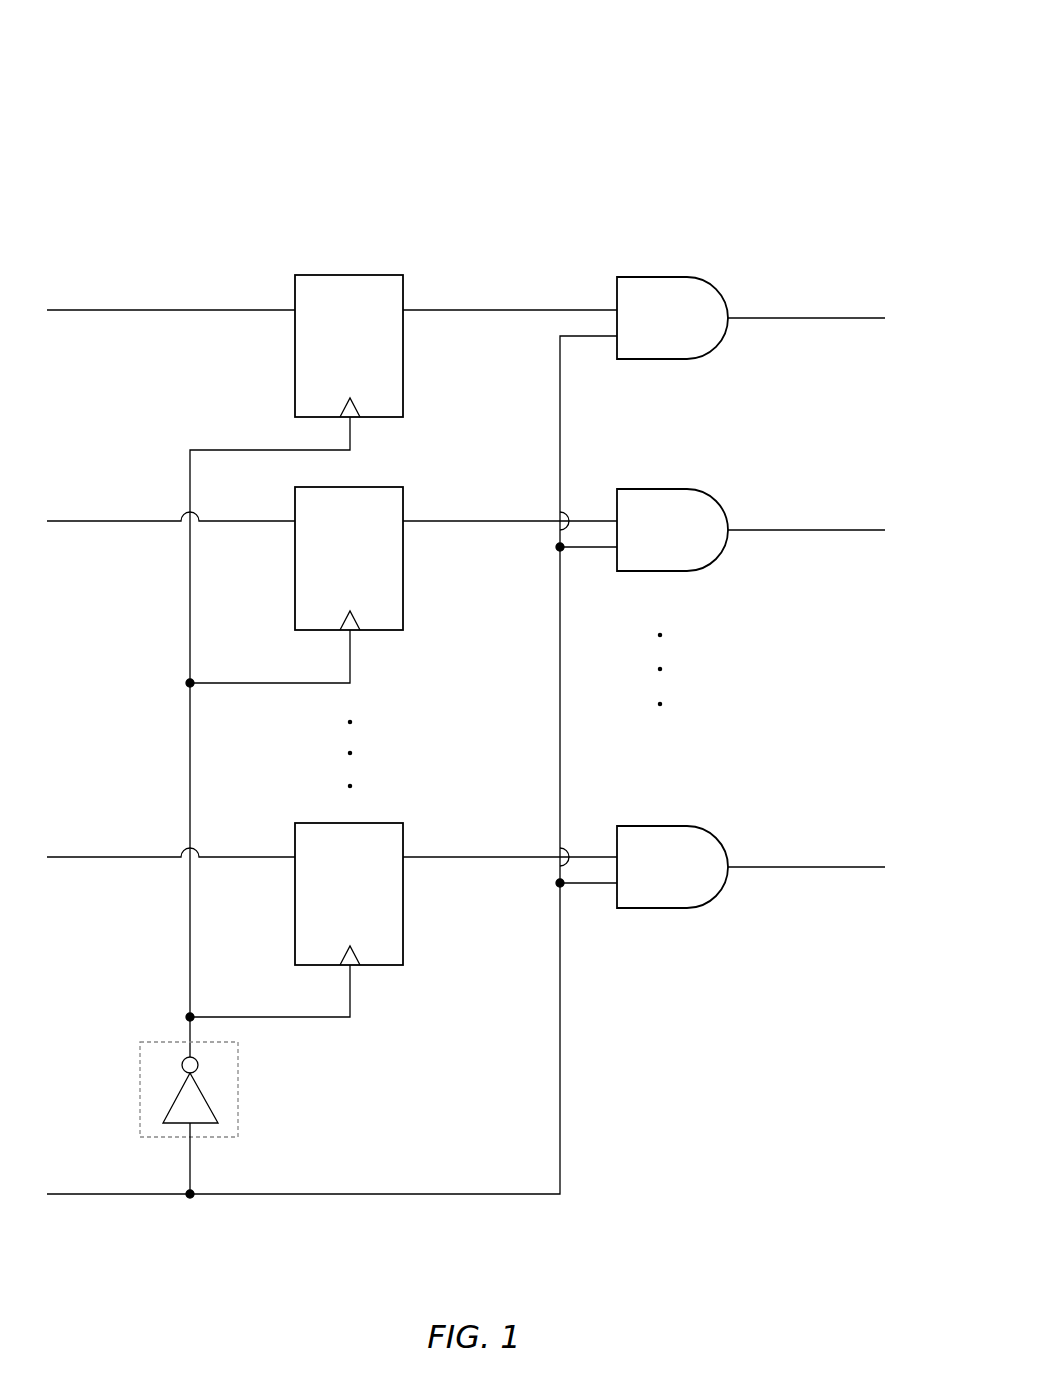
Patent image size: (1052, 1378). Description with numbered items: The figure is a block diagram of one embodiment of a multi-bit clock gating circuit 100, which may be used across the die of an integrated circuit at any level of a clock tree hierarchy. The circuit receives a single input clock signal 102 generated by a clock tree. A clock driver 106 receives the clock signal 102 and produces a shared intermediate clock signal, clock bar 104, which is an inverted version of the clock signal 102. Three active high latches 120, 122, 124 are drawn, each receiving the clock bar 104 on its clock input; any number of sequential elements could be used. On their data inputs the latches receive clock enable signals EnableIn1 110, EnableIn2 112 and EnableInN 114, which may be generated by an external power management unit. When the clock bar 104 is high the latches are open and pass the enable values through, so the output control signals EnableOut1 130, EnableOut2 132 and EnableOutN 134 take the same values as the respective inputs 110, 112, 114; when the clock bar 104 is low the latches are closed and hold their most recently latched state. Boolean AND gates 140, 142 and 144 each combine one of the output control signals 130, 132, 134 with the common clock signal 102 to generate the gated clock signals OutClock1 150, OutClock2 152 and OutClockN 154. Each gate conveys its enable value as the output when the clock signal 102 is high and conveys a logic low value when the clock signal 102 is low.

The multi-bit clock gating circuit 100 is at (814, 106).
The single input clock signal 102 is at (82, 1194).
The clock bar 104 is at (190, 977).
The clock driver 106 is at (190, 1098).
The clock enable signal EnableIn1 110 is at (138, 309).
The clock enable signal EnableIn2 112 is at (118, 520).
The clock enable signal EnableInN 114 is at (106, 857).
The active high latch 120 is at (348, 275).
The active high latch 122 is at (352, 487).
The active high latch 124 is at (352, 823).
The output control signal EnableOut1 130 is at (527, 309).
The output control signal EnableOut2 132 is at (503, 527).
The output control signal EnableOutN 134 is at (507, 860).
The Boolean AND gate 140 is at (673, 277).
The Boolean AND gate 142 is at (673, 489).
The Boolean AND gate 144 is at (673, 826).
The gated clock signal OutClock1 150 is at (828, 318).
The gated clock signal OutClock2 152 is at (828, 530).
The gated clock signal OutClockN 154 is at (828, 867).